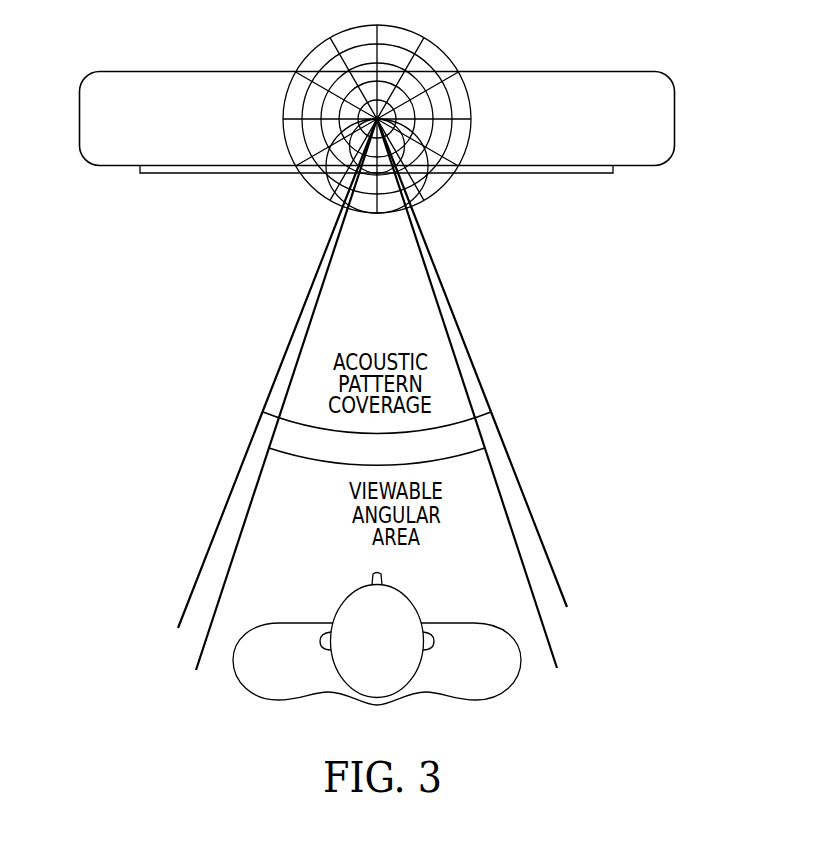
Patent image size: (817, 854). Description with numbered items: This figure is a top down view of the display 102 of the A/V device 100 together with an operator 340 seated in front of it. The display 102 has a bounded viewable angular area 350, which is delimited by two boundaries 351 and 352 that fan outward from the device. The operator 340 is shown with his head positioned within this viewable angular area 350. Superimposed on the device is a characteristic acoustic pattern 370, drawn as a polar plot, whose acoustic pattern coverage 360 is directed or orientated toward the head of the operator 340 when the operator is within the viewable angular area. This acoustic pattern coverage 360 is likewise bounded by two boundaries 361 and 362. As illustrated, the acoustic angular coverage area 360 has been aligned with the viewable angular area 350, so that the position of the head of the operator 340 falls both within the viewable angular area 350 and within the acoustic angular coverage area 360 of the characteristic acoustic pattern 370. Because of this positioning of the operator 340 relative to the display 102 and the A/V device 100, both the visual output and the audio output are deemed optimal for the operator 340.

The A/V device 100 is at (728, 80).
The display 102 is at (192, 173).
The operator 340 is at (515, 682).
The viewable angular area 350 is at (343, 464).
The boundary 351 is at (515, 542).
The boundary 352 is at (242, 530).
The acoustic pattern coverage 360 is at (350, 431).
The boundary 361 is at (546, 552).
The boundary 362 is at (221, 519).
The characteristic acoustic pattern 370 is at (440, 50).